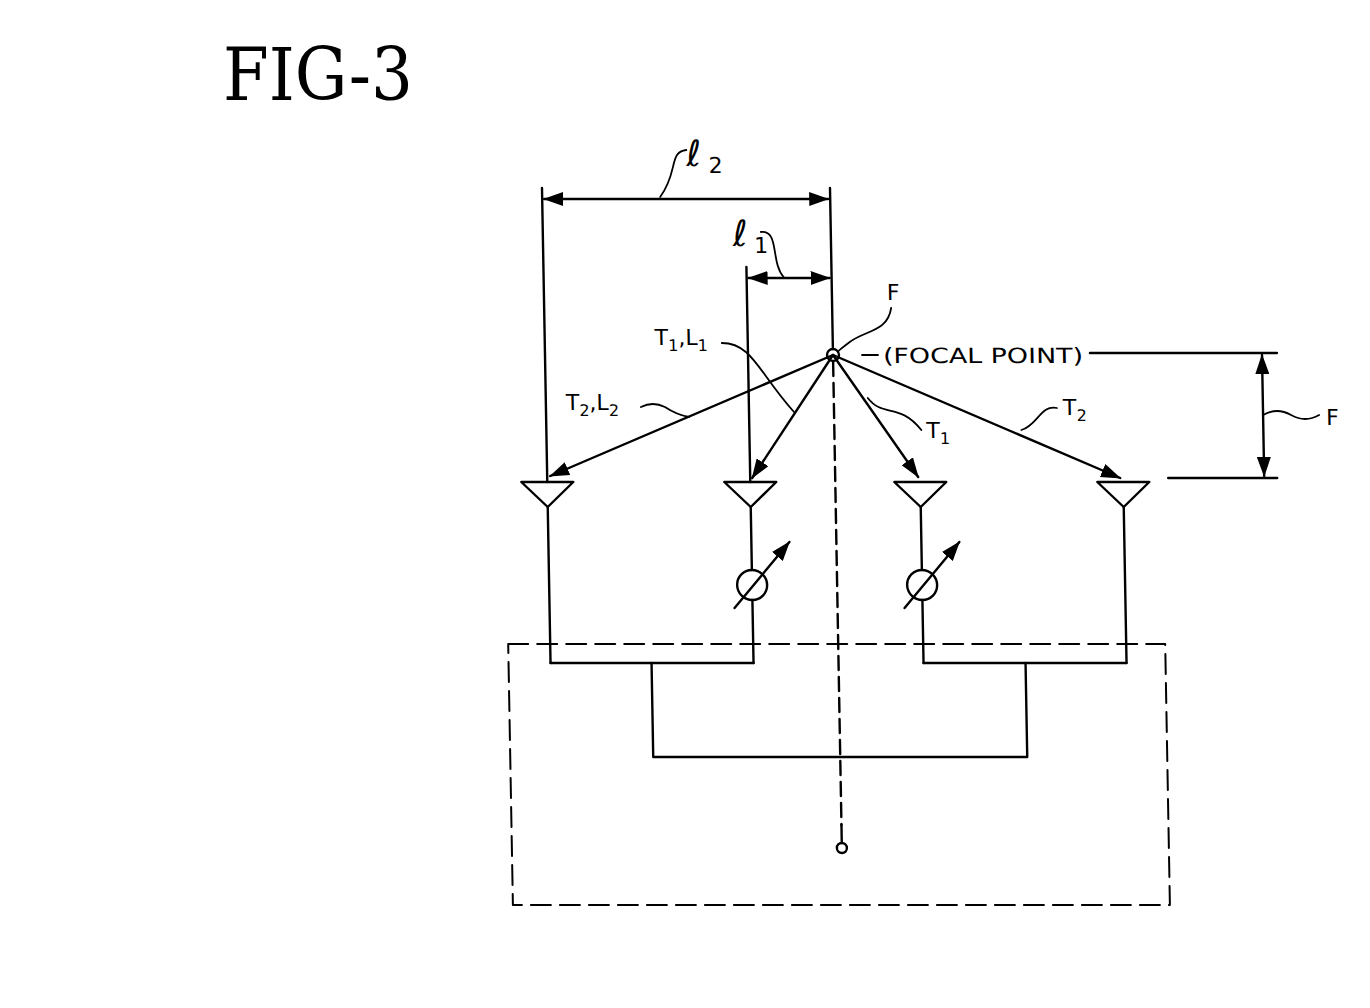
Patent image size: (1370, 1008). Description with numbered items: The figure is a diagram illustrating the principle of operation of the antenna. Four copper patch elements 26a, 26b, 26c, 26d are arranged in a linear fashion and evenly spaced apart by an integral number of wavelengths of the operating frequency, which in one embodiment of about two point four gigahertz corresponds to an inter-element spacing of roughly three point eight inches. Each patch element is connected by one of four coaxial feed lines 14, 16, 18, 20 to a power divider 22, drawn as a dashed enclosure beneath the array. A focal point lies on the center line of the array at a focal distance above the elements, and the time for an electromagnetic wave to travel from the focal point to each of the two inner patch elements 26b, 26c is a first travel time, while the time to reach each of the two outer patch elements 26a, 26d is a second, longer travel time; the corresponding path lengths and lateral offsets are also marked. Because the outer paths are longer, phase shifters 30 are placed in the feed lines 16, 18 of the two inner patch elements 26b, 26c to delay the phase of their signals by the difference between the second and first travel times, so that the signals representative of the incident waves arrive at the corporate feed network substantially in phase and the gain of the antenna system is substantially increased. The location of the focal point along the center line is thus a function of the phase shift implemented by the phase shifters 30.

The coaxial feed line 14 is at (545, 548).
The coaxial feed line 16 is at (748, 548).
The coaxial feed line 18 is at (918, 548).
The coaxial feed line 20 is at (1123, 575).
The power divider 22 is at (1097, 790).
The copper patch element 26a is at (533, 477).
The copper patch element 26b is at (732, 482).
The copper patch element 26c is at (943, 483).
The copper patch element 26d is at (1130, 505).
The phase shifter 30 is at (763, 590).